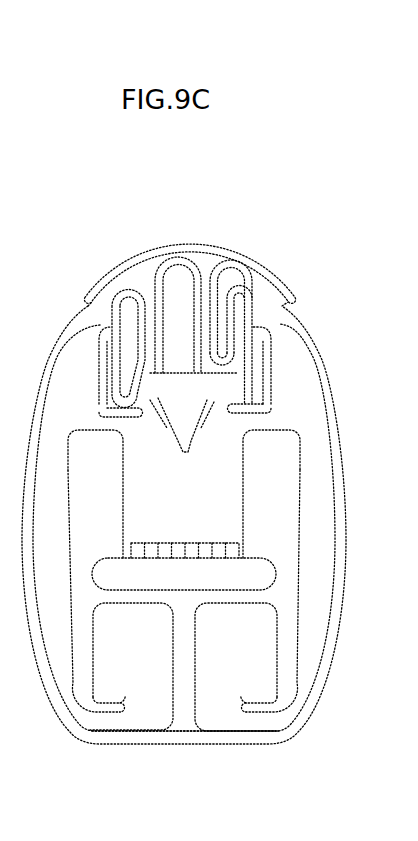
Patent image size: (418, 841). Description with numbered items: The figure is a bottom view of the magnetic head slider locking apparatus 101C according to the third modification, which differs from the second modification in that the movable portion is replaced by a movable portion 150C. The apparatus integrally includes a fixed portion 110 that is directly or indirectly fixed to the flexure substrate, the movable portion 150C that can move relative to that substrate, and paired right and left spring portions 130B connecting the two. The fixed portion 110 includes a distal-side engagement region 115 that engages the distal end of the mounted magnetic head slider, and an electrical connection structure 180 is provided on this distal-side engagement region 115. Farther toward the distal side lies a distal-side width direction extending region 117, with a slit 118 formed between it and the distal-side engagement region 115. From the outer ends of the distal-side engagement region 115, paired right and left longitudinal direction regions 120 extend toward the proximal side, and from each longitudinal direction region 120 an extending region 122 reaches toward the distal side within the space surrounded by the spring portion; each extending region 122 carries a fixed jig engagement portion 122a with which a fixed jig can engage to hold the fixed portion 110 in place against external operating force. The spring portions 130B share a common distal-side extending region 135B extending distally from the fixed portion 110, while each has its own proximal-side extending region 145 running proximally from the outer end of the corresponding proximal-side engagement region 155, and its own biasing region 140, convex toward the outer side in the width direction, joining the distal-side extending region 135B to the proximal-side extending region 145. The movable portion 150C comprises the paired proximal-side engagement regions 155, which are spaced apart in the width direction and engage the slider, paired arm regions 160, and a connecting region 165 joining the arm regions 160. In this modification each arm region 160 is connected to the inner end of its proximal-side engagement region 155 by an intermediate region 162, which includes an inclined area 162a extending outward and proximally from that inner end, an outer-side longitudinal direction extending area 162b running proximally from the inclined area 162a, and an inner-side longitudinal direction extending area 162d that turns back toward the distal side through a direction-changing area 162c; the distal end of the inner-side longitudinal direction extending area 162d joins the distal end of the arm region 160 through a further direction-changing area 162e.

The magnetic head slider locking apparatus 101C is at (198, 463).
The fixed portion 110 is at (208, 608).
The distal-side engagement region 115 is at (158, 541).
The distal-side width direction extending region 117 is at (132, 596).
The slit 118 is at (173, 584).
The longitudinal direction region 120 is at (113, 503).
The extending region 122 is at (185, 591).
The fixed jig engagement portion 122a is at (177, 686).
The spring portion 130B is at (345, 434).
The distal-side extending region 135B is at (185, 684).
The biasing region 140 is at (344, 468).
The proximal-side extending region 145 is at (100, 390).
The movable portion 150C is at (125, 252).
The proximal-side engagement region 155 is at (138, 426).
The arm region 160 is at (178, 308).
The intermediate region 162 is at (180, 339).
The inclined area 162a is at (181, 440).
The outer-side longitudinal direction extending area 162b is at (108, 320).
The direction-changing area 162c is at (115, 287).
The inner-side longitudinal direction extending area 162d is at (149, 280).
The direction-changing area 162e is at (230, 380).
The connecting region 165 is at (181, 246).
The electrical connection structure 180 is at (185, 519).